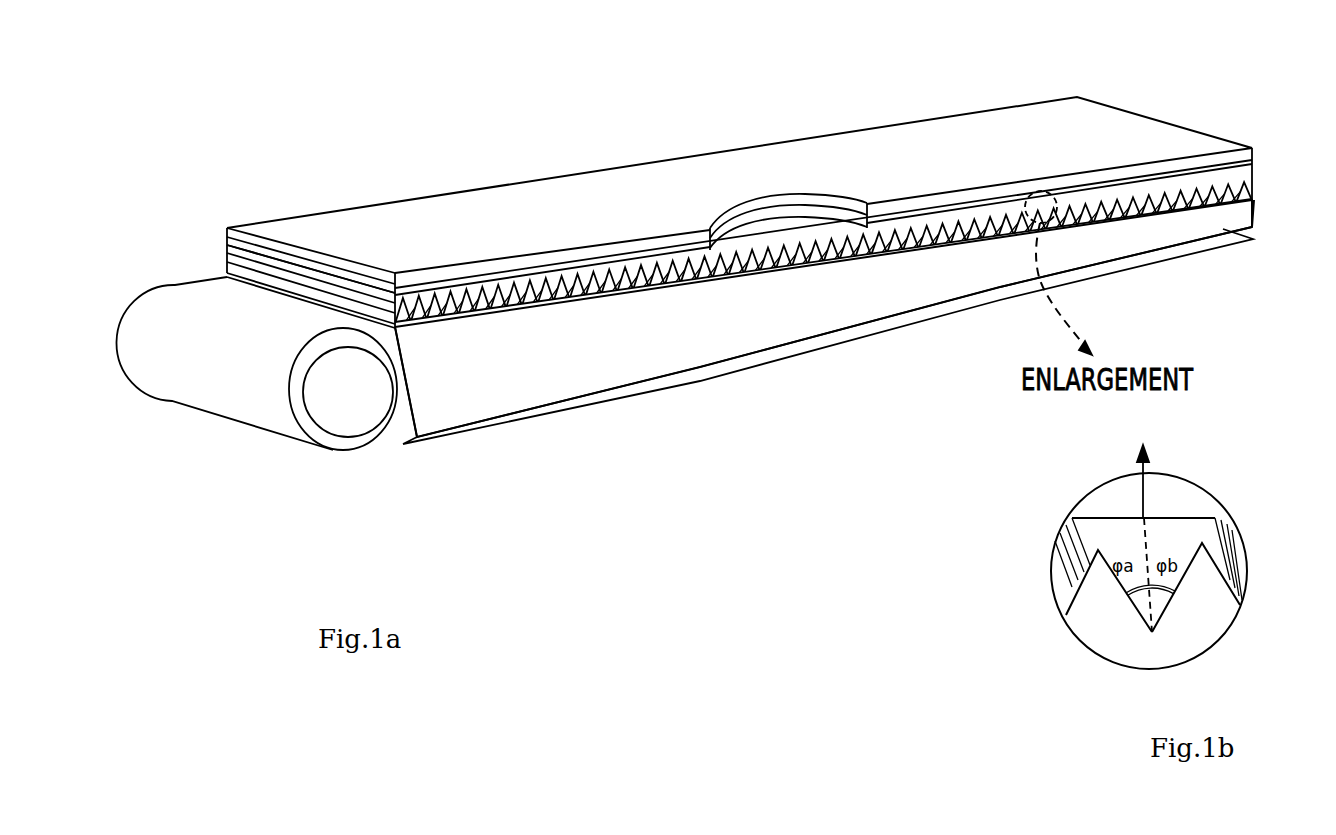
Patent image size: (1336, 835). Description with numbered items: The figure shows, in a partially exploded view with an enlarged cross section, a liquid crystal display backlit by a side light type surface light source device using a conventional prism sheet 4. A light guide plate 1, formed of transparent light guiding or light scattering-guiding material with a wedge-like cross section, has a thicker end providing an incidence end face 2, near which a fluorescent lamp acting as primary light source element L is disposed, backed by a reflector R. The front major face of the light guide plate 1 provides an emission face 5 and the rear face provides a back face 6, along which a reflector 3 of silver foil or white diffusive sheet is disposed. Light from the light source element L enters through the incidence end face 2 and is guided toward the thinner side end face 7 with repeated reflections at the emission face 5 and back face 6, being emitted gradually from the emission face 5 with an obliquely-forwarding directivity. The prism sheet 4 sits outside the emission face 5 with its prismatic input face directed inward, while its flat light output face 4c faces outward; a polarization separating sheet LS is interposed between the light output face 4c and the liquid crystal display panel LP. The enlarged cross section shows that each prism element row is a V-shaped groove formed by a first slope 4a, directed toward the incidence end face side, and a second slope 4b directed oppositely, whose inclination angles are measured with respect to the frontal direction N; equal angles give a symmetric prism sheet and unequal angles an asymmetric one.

In FIG. 1A, the light guide plate 1 is at (545, 371).
In FIG. 1A, the incidence end face 2 is at (405, 416).
In FIG. 1A, the reflector 3 is at (765, 366).
In FIG. 1A, the prism sheet 4 is at (1243, 179).
In FIG. 1B, the first slope 4a is at (1113, 587).
In FIG. 1B, the second slope 4b is at (1187, 583).
In FIG. 1A, the light output face 4c is at (776, 237).
In FIG. 1B, the light output face 4c is at (1181, 514).
In FIG. 1A, the emission face 5 is at (650, 290).
In FIG. 1A, the back face 6 is at (610, 388).
In FIG. 1A, the thinner side end face 7 is at (1257, 215).
In FIG. 1A, the primary light source element L is at (360, 406).
In FIG. 1A, the reflector R is at (220, 399).
In FIG. 1A, the liquid crystal display panel LP is at (224, 228).
In FIG. 1A, the polarization separating sheet LS is at (226, 241).
In FIG. 1B, the frontal direction N is at (1148, 468).